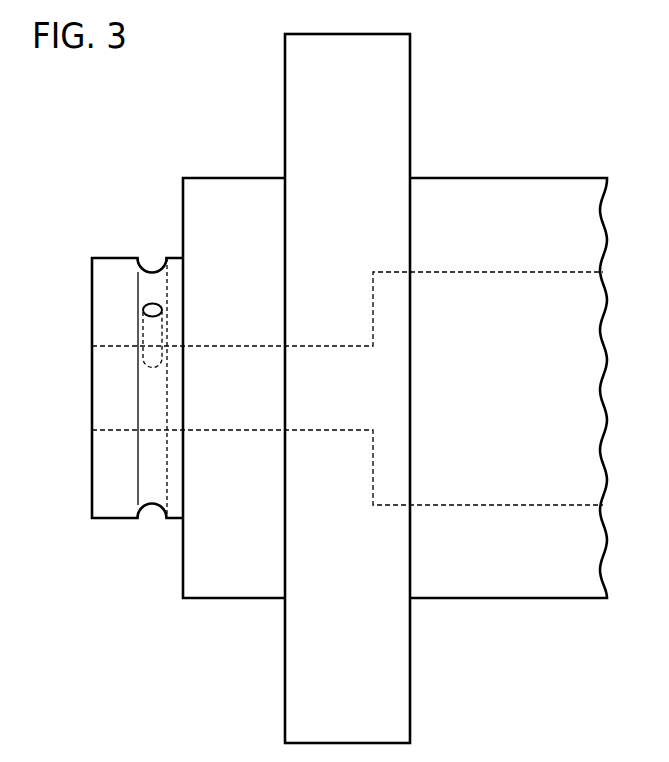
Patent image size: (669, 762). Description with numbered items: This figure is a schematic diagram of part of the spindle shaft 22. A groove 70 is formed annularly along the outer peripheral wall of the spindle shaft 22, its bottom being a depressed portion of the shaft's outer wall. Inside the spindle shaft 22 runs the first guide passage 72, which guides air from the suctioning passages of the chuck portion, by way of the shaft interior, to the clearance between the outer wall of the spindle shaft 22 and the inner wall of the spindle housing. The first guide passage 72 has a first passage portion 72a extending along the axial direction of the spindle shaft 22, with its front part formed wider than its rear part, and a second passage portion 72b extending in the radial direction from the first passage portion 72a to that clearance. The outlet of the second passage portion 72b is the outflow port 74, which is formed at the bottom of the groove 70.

The spindle shaft 22 is at (495, 178).
The groove 70 is at (151, 250).
The first guide passage 72 is at (347, 477).
The first passage portion 72a is at (233, 430).
The second passage portion 72b is at (143, 352).
The outflow port 74 is at (143, 308).